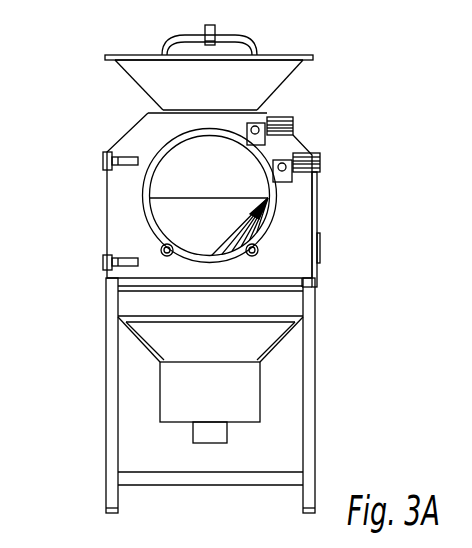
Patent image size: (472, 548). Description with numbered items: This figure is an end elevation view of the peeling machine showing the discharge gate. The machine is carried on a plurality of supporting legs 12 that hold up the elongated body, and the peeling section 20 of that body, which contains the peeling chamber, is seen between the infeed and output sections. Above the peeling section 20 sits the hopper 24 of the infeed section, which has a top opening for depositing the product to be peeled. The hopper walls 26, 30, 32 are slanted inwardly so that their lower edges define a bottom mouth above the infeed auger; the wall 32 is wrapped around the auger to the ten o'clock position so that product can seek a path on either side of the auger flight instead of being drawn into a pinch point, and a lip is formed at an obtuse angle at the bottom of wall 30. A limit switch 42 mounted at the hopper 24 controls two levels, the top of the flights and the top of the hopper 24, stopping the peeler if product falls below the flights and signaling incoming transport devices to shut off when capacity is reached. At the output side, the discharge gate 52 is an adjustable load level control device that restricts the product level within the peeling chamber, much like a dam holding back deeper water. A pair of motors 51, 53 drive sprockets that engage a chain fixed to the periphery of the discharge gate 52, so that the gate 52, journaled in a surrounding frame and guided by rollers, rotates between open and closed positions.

The legs 12 is at (107, 490).
The peeling section 20 is at (127, 132).
The hopper 24 is at (133, 56).
The hopper wall 26 is at (128, 82).
The hopper wall 30 is at (285, 78).
The hopper wall 32 is at (219, 95).
The limit switch 42 is at (211, 30).
The motor 51 is at (320, 155).
The discharge gate 52 is at (183, 213).
The motor 53 is at (294, 118).